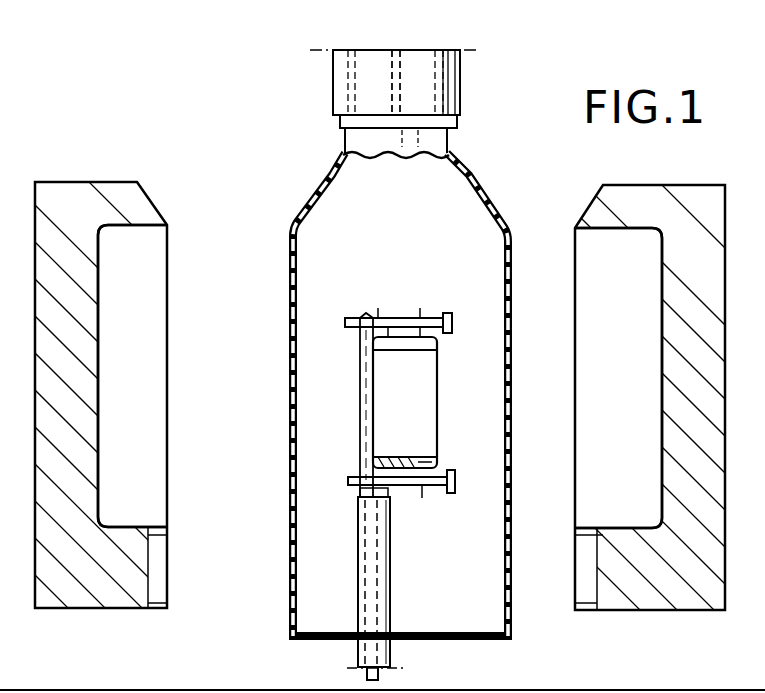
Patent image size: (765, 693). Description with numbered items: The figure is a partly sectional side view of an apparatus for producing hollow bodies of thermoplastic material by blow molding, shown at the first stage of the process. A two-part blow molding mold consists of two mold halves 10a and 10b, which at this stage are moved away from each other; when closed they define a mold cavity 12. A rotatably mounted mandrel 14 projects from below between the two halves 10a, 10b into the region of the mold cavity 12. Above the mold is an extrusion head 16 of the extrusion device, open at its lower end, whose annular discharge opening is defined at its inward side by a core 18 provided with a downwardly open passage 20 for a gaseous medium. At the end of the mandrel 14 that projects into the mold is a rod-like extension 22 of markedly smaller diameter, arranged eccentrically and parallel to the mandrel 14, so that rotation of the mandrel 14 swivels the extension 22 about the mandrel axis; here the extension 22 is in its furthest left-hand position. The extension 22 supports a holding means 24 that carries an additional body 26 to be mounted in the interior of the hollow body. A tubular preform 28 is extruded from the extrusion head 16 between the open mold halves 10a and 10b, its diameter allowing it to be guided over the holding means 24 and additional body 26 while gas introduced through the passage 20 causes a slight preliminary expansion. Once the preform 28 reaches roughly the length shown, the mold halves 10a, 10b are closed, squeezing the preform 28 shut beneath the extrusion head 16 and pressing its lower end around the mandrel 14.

The blow molding mold half 10a is at (67, 590).
The blow molding mold half 10b is at (687, 593).
The mold cavity 12 is at (149, 326).
The mandrel 14 is at (392, 652).
The extrusion head 16 is at (458, 100).
The core 18 is at (420, 67).
The passage 20 is at (392, 72).
The rod-like extension 22 is at (362, 372).
The holding means 24 is at (428, 311).
The additional body 26 is at (437, 463).
The preform 28 is at (508, 367).